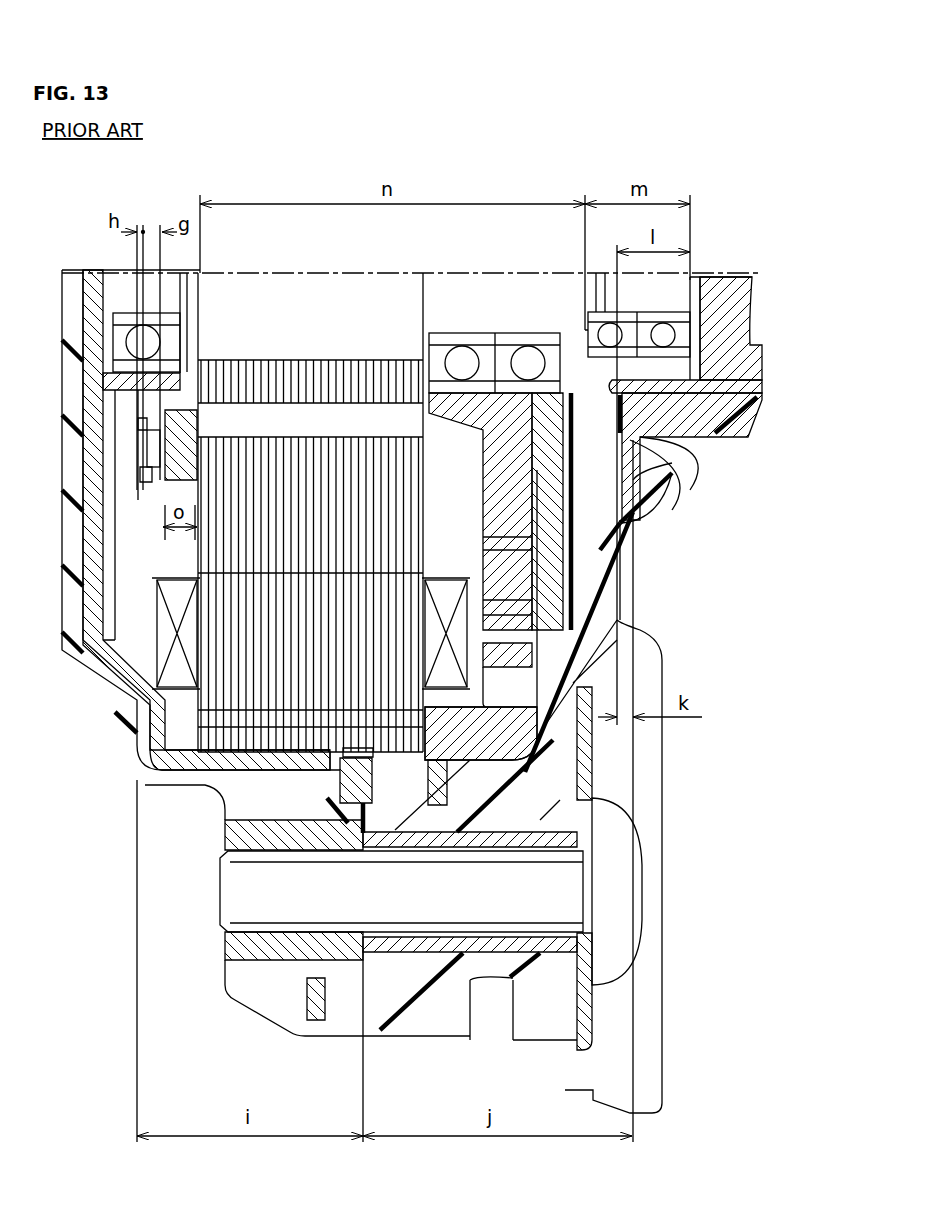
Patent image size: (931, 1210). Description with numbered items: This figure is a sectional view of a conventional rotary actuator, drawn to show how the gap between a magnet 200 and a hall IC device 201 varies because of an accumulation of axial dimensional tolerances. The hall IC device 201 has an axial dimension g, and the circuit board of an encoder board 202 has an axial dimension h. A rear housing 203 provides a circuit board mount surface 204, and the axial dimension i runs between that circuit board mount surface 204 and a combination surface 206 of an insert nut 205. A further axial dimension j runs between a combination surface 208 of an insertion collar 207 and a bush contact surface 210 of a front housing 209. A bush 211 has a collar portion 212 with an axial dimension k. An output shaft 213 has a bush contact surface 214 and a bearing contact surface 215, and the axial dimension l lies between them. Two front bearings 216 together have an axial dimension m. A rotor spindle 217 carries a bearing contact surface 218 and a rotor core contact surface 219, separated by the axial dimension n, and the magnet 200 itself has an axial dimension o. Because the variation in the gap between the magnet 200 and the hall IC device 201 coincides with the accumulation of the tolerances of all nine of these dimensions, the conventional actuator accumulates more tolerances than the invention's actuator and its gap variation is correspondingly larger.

The magnet 200 is at (140, 472).
The hall IC device 201 is at (157, 452).
The encoder board 202 is at (138, 424).
The rear housing 203 is at (150, 768).
The circuit board mount surface 204 is at (150, 500).
The insert nut 205 is at (262, 948).
The combination surface 206 is at (366, 945).
The insertion collar 207 is at (493, 945).
The combination surface 208 is at (335, 1020).
The front housing 209 is at (653, 513).
The bush contact surface 210 is at (715, 410).
The bush 211 is at (757, 391).
The collar portion 212 is at (640, 432).
The output shaft 213 is at (752, 362).
The bush contact surface 214 is at (650, 487).
The bearing contact surface 215 is at (703, 320).
The front bearings 216 is at (583, 330).
The rotor spindle 217 is at (327, 300).
The bearing contact surface 218 is at (605, 328).
The rotor core contact surface 219 is at (200, 365).